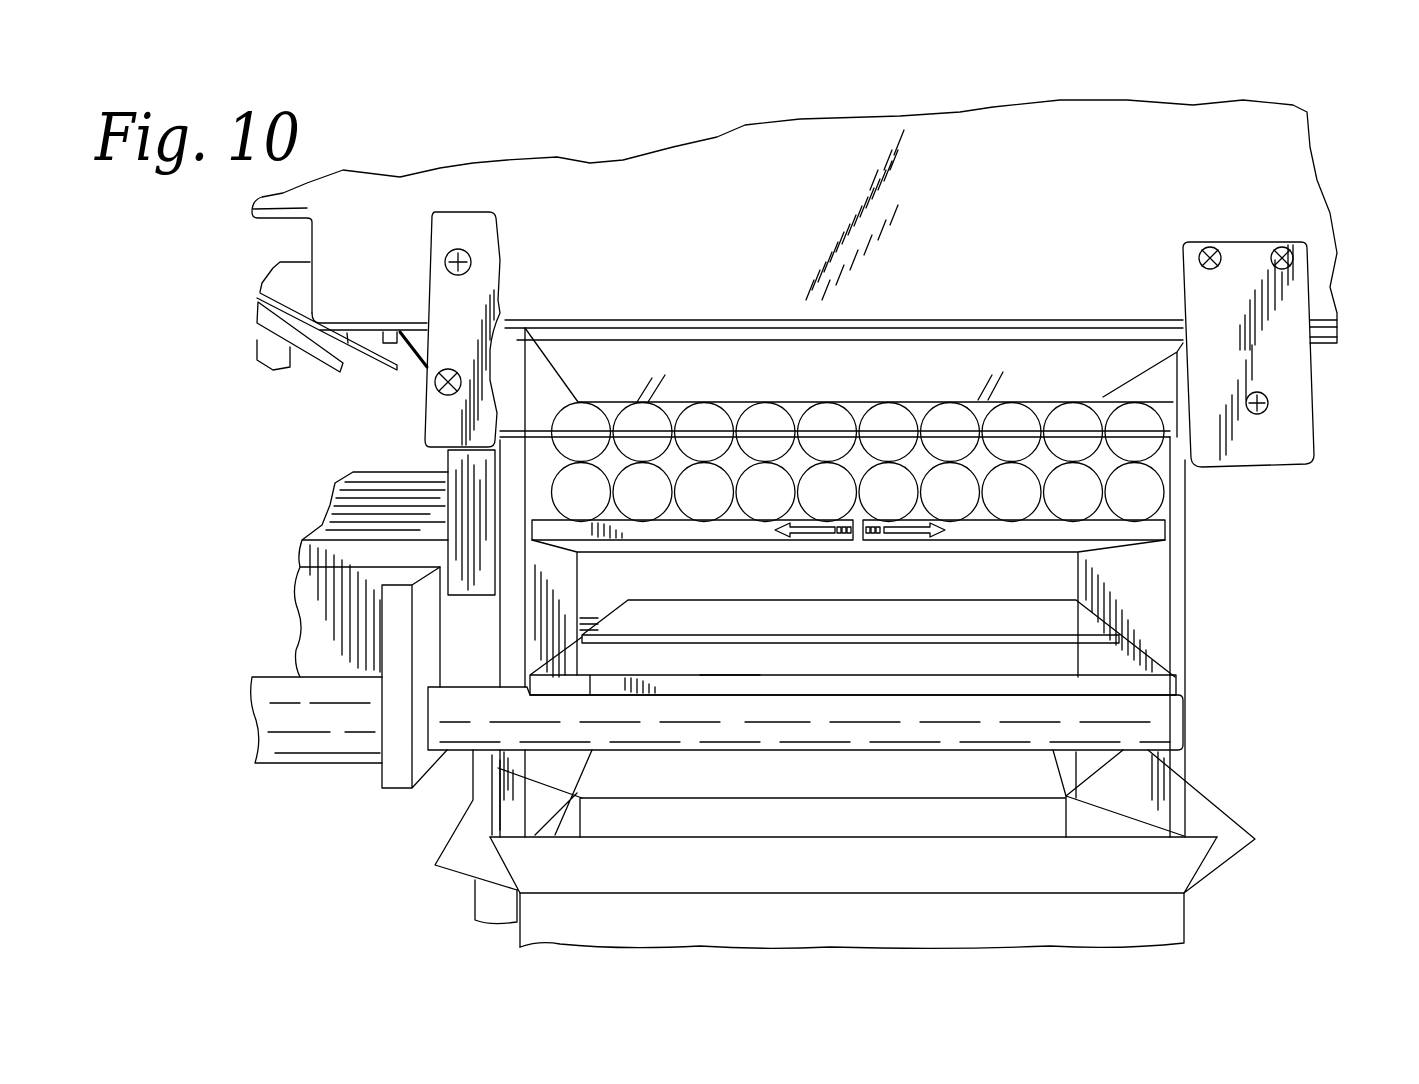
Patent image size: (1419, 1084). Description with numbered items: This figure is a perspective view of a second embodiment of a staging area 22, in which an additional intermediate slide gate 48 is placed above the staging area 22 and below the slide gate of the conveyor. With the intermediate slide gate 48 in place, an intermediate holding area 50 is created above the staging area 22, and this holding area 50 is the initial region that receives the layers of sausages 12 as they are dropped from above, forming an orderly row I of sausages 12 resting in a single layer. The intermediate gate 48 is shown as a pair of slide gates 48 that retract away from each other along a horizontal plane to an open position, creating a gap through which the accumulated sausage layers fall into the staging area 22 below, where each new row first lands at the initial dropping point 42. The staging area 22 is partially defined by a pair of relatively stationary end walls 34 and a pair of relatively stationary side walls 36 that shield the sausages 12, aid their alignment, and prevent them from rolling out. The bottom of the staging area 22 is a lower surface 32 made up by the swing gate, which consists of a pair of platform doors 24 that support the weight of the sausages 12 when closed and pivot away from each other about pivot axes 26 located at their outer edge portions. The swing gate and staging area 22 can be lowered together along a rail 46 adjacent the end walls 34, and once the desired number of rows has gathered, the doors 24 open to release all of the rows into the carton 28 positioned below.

The sausages 12 is at (702, 490).
The staging area 22 is at (1053, 580).
The platform doors 24 is at (1163, 684).
The pivot axes 26 is at (1165, 734).
The carton 28 is at (1168, 913).
The lower surface 32 is at (733, 673).
The end walls 34 is at (552, 765).
The side walls 36 is at (540, 390).
The initial dropping point 42 is at (1185, 393).
The rail 46 is at (477, 890).
The intermediate slide gate 48 is at (1145, 530).
The intermediate holding area 50 is at (1160, 465).
The first row of sausages I is at (565, 491).